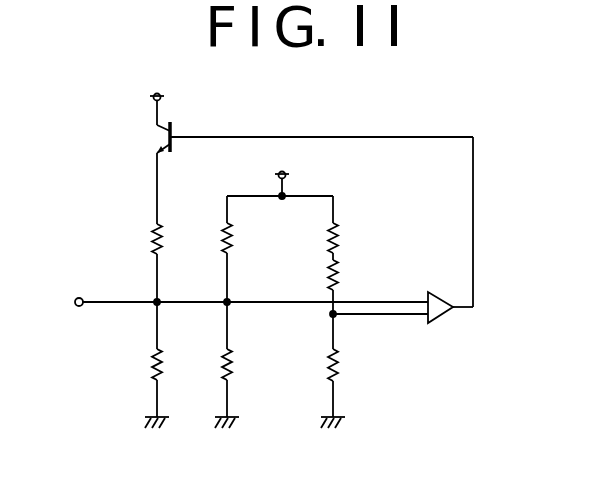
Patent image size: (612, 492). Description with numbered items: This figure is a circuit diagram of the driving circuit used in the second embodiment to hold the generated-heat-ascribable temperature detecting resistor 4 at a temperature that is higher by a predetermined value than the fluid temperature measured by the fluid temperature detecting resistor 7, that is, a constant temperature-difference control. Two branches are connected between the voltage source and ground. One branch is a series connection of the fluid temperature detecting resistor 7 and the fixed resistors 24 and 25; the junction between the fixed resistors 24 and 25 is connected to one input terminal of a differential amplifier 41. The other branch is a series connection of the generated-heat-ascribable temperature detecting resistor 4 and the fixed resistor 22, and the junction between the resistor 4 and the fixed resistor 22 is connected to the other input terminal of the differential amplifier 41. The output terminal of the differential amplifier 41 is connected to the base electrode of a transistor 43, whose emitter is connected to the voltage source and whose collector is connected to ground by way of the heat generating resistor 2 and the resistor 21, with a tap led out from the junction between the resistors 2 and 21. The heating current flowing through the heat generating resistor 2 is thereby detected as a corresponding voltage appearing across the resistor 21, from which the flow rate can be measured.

The transistor 43 is at (166, 135).
The heat generating resistor 2 is at (152, 240).
The resistor 21 is at (153, 351).
The generated-heat-ascribable temperature detecting resistor 4 is at (232, 238).
The fixed resistor 22 is at (232, 352).
The fluid temperature detecting resistor 7 is at (338, 226).
The fixed resistor 24 is at (338, 263).
The fixed resistor 25 is at (338, 362).
The differential amplifier 41 is at (443, 314).